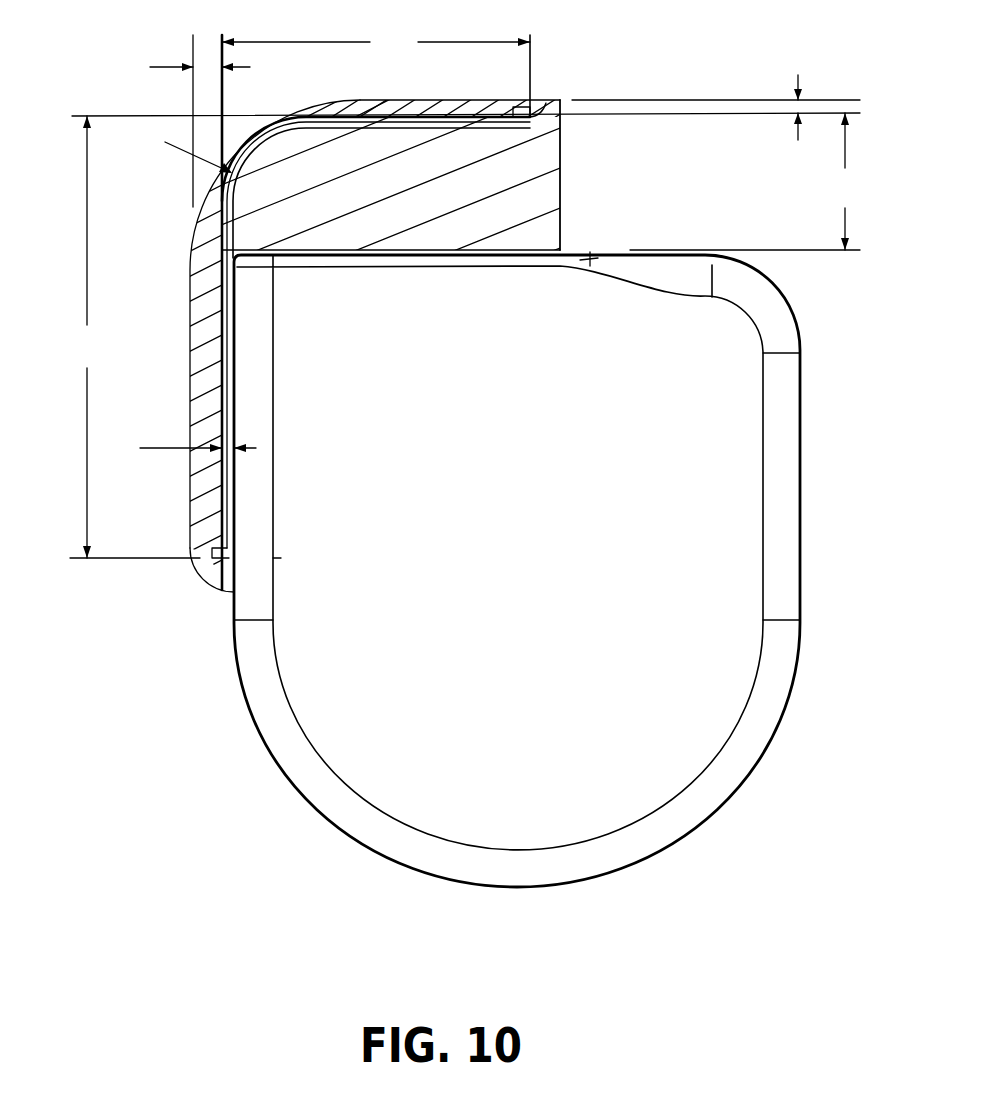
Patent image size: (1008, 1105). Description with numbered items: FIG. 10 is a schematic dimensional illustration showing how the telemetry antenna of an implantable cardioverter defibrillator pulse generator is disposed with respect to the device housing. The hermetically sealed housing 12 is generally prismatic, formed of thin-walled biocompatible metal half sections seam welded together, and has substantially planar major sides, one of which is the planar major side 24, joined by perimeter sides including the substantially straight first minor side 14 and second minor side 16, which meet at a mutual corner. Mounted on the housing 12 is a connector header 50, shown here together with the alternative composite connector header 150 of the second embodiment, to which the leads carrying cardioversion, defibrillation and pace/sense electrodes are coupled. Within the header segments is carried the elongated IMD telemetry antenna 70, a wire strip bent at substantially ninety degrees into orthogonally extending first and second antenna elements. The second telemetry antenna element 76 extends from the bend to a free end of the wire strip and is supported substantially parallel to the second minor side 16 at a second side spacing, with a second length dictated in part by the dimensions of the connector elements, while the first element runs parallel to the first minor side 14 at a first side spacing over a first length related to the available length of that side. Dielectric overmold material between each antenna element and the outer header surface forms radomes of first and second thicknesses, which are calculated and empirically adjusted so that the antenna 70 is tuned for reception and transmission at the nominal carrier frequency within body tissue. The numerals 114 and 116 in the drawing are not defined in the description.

The hermetically sealed housing 12 is at (703, 848).
The first minor side 14 is at (379, 312).
The liner 114 is at (235, 483).
The second minor side 16 is at (651, 241).
The shell top wall 116 is at (587, 247).
The planar major side 24 is at (193, 288).
The connector header 50 is at (610, 138).
The composite connector header 150 is at (776, 53).
The IMD telemetry antenna 70 is at (348, 93).
The second telemetry antenna element 76 is at (440, 117).